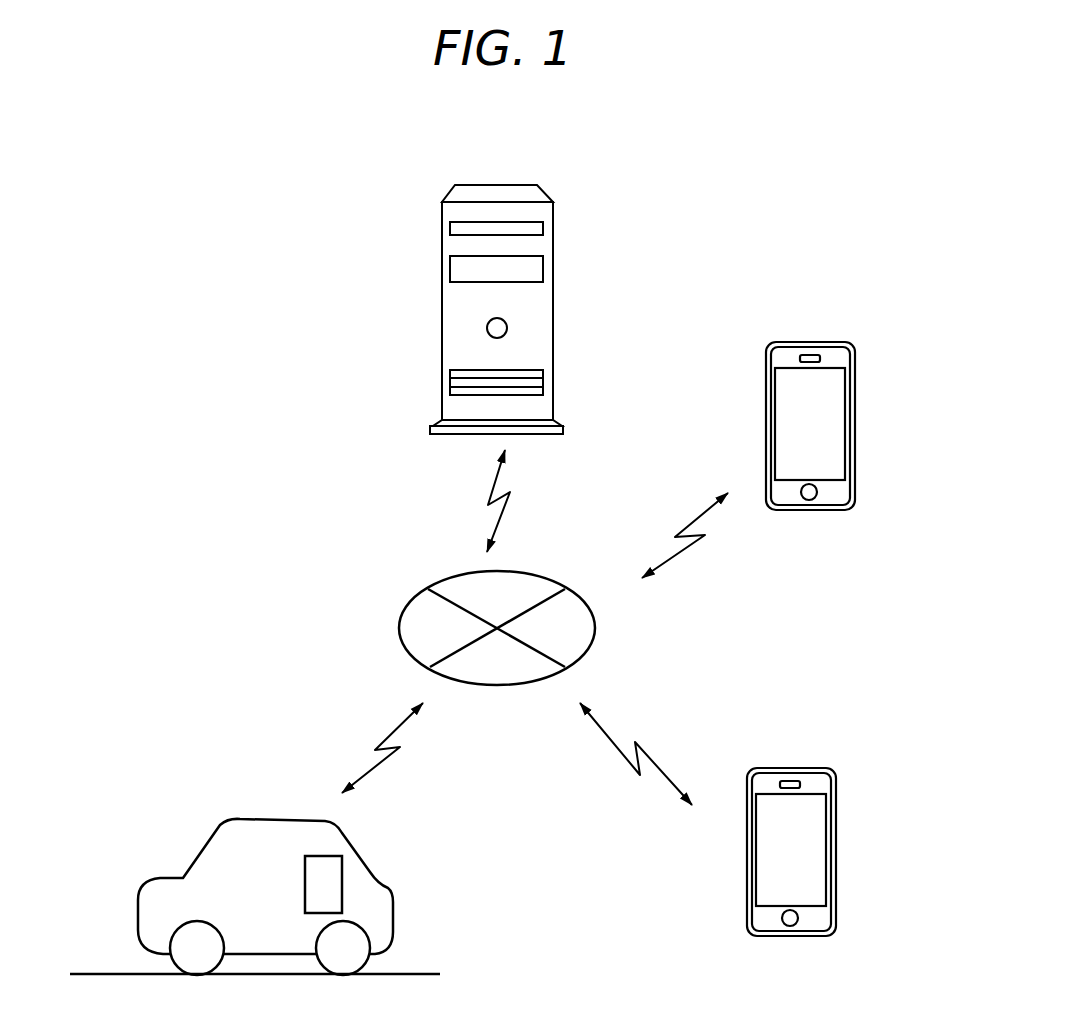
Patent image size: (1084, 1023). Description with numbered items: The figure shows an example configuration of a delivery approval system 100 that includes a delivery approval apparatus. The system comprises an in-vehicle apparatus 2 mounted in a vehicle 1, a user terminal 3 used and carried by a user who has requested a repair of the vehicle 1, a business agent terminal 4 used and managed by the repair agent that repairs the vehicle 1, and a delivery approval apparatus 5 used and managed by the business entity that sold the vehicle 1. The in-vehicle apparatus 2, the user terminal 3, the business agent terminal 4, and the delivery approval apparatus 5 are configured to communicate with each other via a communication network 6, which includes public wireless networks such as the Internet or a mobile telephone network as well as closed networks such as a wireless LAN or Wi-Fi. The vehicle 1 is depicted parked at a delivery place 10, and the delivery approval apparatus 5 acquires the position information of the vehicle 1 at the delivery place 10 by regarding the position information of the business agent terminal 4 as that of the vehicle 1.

The delivery approval system 100 is at (775, 210).
The vehicle 1 is at (185, 852).
The in-vehicle apparatus 2 is at (323, 856).
The user terminal 3 is at (843, 770).
The business agent terminal 4 is at (866, 341).
The delivery approval apparatus 5 is at (553, 190).
The communication network 6 is at (550, 578).
The delivery place 10 is at (103, 974).